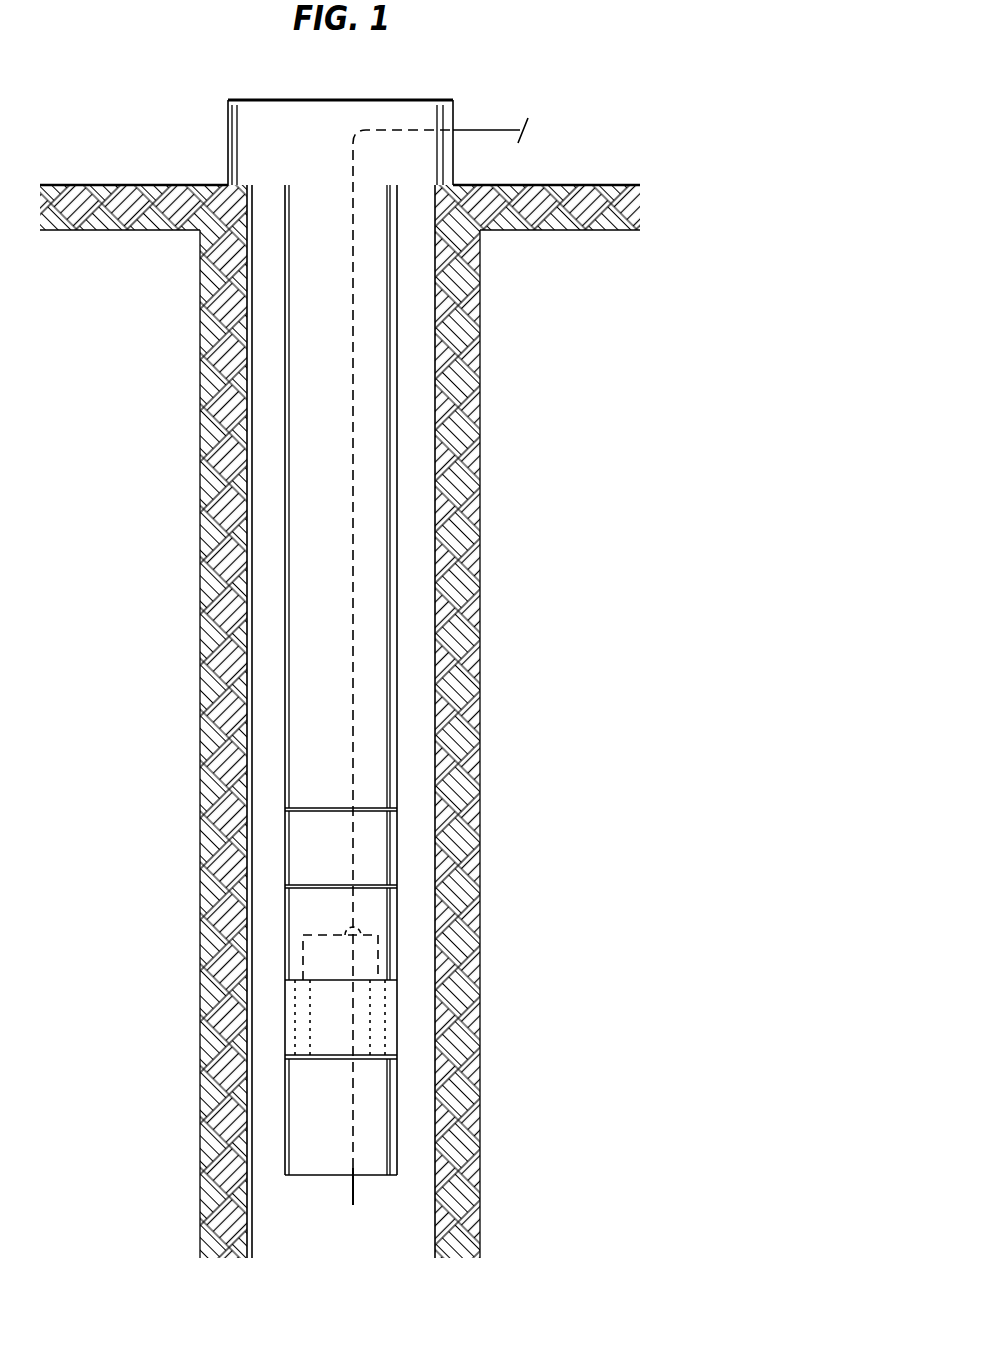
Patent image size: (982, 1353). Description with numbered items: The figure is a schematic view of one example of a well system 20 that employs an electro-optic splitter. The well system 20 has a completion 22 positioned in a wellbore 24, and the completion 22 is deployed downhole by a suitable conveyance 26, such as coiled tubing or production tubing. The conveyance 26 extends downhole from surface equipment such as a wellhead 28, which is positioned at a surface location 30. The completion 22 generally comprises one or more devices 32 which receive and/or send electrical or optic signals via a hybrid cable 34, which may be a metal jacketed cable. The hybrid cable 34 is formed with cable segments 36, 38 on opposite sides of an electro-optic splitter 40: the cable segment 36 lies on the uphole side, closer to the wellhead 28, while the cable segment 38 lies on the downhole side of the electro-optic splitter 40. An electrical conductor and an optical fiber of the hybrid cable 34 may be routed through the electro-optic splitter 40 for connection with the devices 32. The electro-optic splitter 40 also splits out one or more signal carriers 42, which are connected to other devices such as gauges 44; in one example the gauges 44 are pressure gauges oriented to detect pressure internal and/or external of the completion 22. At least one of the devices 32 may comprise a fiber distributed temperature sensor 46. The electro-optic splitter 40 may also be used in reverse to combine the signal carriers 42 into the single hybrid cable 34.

The well system 20 is at (187, 127).
The completion 22 is at (275, 773).
The wellbore 24 is at (267, 388).
The conveyance 26 is at (302, 613).
The wellhead 28 is at (400, 100).
The surface location 30 is at (125, 185).
The devices 32 is at (300, 1135).
The hybrid cable 34 is at (362, 388).
The cable segment 36 is at (355, 428).
The cable segment 38 is at (355, 1105).
The electro-optic splitter 40 is at (355, 932).
The signal carriers 42 is at (303, 945).
The gauges 44 is at (300, 1007).
The fiber distributed temperature sensor 46 is at (355, 1193).